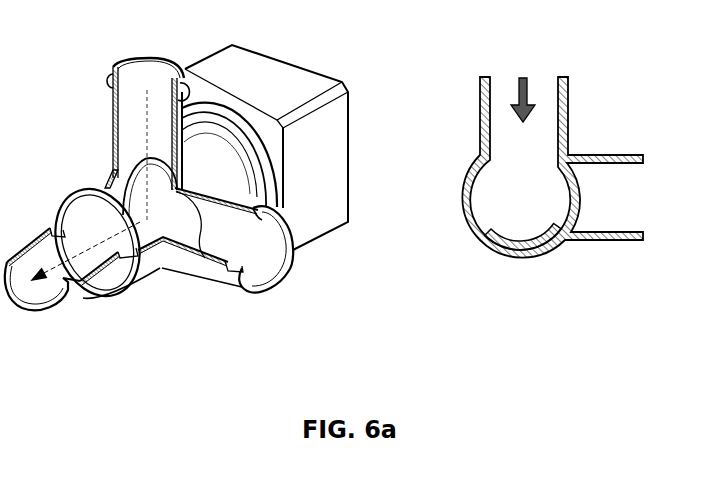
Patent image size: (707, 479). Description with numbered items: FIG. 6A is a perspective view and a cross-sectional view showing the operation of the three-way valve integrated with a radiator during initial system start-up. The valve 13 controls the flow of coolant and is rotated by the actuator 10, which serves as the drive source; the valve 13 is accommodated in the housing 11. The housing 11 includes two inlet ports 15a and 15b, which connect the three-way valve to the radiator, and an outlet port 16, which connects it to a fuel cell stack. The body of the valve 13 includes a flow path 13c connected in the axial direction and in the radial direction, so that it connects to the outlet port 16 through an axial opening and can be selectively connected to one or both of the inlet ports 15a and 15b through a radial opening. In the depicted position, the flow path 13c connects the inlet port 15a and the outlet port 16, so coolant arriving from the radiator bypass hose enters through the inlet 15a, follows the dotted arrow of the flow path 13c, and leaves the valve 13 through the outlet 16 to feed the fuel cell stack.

The actuator 10 is at (298, 72).
The housing 11 is at (204, 165).
The valve 13 is at (172, 216).
The flow path 13c is at (503, 180).
The inlet port 15a is at (112, 100).
The inlet port 15b is at (210, 270).
The outlet port 16 is at (70, 300).